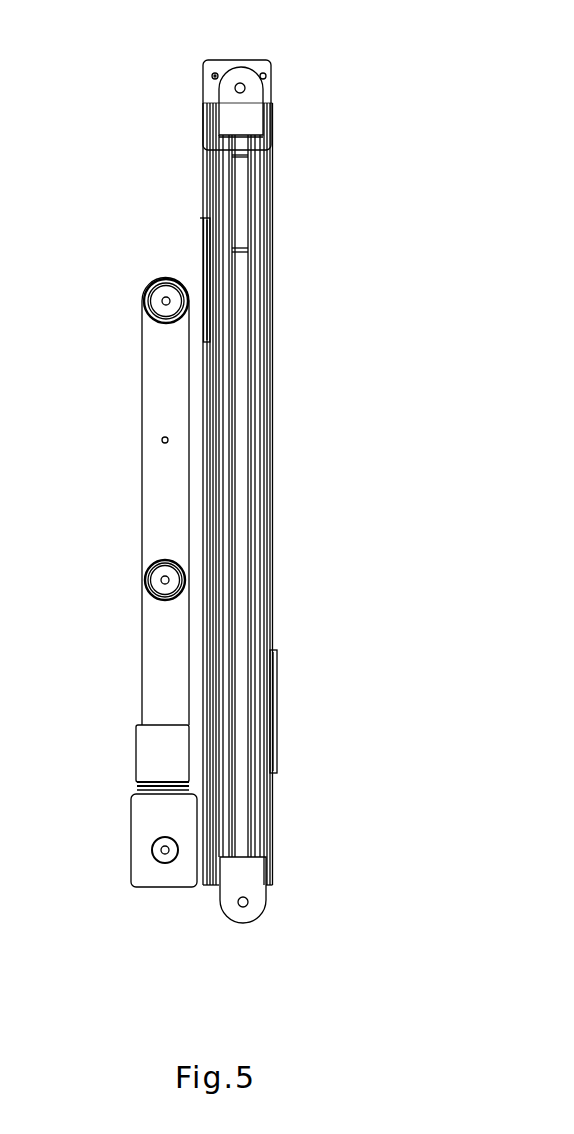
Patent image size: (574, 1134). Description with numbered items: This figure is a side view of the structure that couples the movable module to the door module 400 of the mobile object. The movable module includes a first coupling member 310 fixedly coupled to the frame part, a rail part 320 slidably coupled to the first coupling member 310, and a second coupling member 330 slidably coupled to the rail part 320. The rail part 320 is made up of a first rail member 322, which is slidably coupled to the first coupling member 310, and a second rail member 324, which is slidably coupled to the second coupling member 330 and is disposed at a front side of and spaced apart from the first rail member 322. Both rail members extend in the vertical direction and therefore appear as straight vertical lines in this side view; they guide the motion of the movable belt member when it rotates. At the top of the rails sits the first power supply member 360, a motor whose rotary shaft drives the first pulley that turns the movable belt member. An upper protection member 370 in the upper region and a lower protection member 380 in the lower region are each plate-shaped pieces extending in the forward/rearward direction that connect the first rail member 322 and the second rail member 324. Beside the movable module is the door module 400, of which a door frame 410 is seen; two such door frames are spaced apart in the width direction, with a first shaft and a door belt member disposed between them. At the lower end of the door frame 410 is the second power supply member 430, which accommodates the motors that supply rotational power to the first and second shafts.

The first coupling member 310 is at (277, 680).
The rail part 320 is at (419, 214).
The first rail member 322 is at (263, 145).
The second rail member 324 is at (223, 160).
The second coupling member 330 is at (203, 232).
The first power supply member 360 is at (217, 61).
The upper protection member 370 is at (248, 75).
The lower protection member 380 is at (253, 875).
The door module 400 is at (122, 450).
The door frame 410 is at (165, 532).
The second power supply member 430 is at (158, 814).